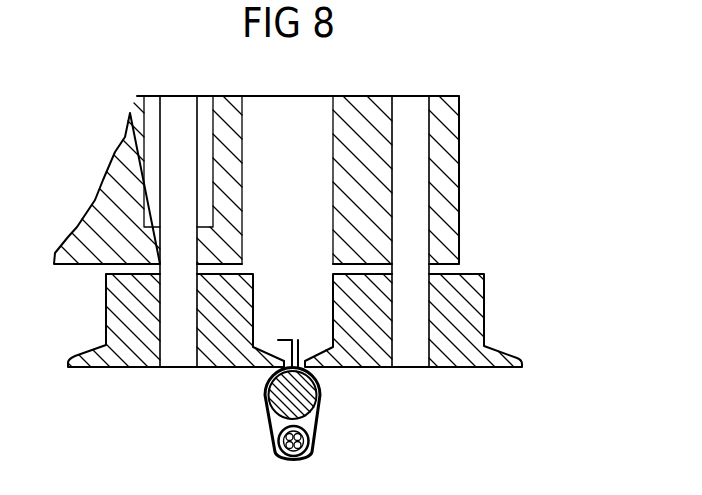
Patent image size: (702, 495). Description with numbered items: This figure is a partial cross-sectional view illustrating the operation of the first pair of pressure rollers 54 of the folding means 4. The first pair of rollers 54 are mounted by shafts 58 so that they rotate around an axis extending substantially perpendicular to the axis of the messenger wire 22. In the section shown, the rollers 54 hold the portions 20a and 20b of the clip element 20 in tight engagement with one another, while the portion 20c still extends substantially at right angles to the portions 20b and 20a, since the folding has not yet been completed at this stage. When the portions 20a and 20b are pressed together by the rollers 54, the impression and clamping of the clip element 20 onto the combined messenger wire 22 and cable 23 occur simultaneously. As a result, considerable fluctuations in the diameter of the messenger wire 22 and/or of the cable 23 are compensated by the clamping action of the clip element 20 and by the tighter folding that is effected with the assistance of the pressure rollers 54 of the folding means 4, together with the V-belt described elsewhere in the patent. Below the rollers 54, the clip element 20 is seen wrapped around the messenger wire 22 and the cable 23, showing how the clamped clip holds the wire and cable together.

The folding means 4 is at (467, 178).
The shafts 58 is at (178, 110).
The first pair of pressure rollers 54 is at (213, 358).
The clip element 20 is at (316, 419).
The portion of the clip element 20a is at (278, 356).
The portion of the clip element 20b is at (297, 341).
The portion of the clip element 20c is at (285, 341).
The messenger wire 22 is at (308, 393).
The cable 23 is at (280, 452).